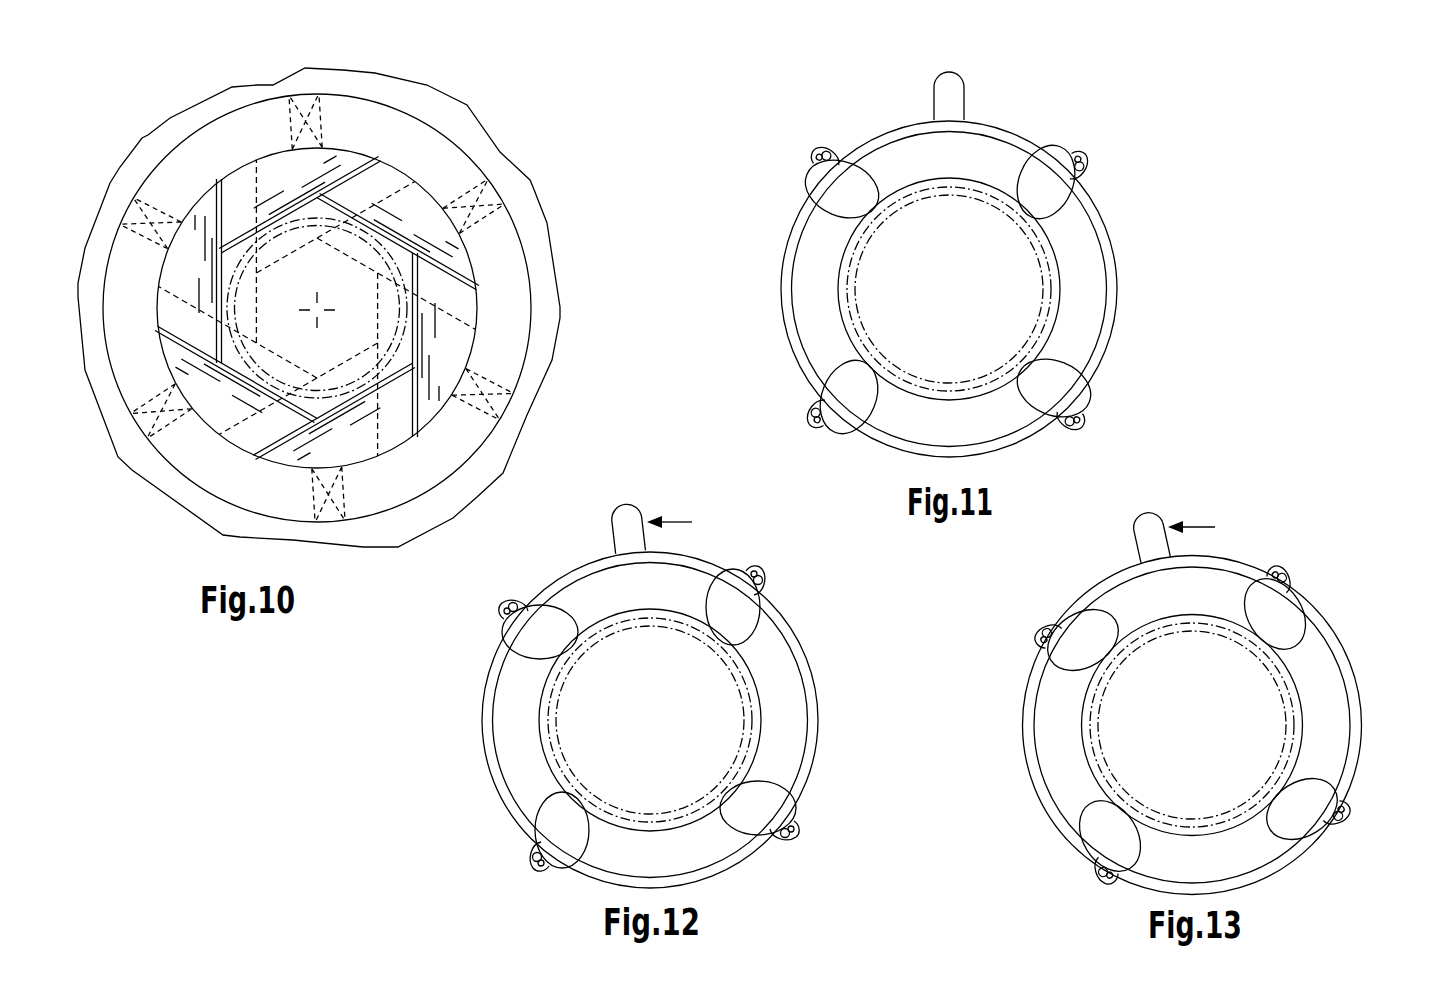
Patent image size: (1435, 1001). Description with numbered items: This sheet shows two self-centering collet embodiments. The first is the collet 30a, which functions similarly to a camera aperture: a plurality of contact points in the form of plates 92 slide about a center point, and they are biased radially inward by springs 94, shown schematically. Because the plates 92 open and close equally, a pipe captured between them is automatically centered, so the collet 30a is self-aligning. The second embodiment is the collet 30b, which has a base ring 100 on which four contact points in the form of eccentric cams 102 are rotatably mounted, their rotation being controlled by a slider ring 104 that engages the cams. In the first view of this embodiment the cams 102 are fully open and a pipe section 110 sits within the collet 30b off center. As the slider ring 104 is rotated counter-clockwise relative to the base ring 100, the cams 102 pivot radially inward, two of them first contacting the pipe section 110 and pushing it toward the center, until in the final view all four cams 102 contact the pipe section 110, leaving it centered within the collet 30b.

In FIG. 10, the collet 30a is at (128, 488).
In FIG. 10, the plates 92 is at (214, 180).
In FIG. 10, the springs 94 is at (473, 187).
In FIG. 11, the collet 30b is at (762, 338).
In FIG. 12, the collet 30b is at (460, 778).
In FIG. 13, the collet 30b is at (1000, 752).
In FIG. 11, the base ring 100 is at (970, 150).
In FIG. 12, the base ring 100 is at (682, 588).
In FIG. 13, the base ring 100 is at (1205, 590).
In FIG. 11, the eccentric cams 102 is at (1035, 182).
In FIG. 12, the eccentric cams 102 is at (745, 625).
In FIG. 13, the eccentric cams 102 is at (1290, 628).
In FIG. 11, the slider ring 104 is at (892, 132).
In FIG. 12, the slider ring 104 is at (592, 565).
In FIG. 13, the slider ring 104 is at (1112, 590).
In FIG. 11, the pipe section 110 is at (860, 312).
In FIG. 12, the pipe section 110 is at (560, 735).
In FIG. 13, the pipe section 110 is at (1100, 738).